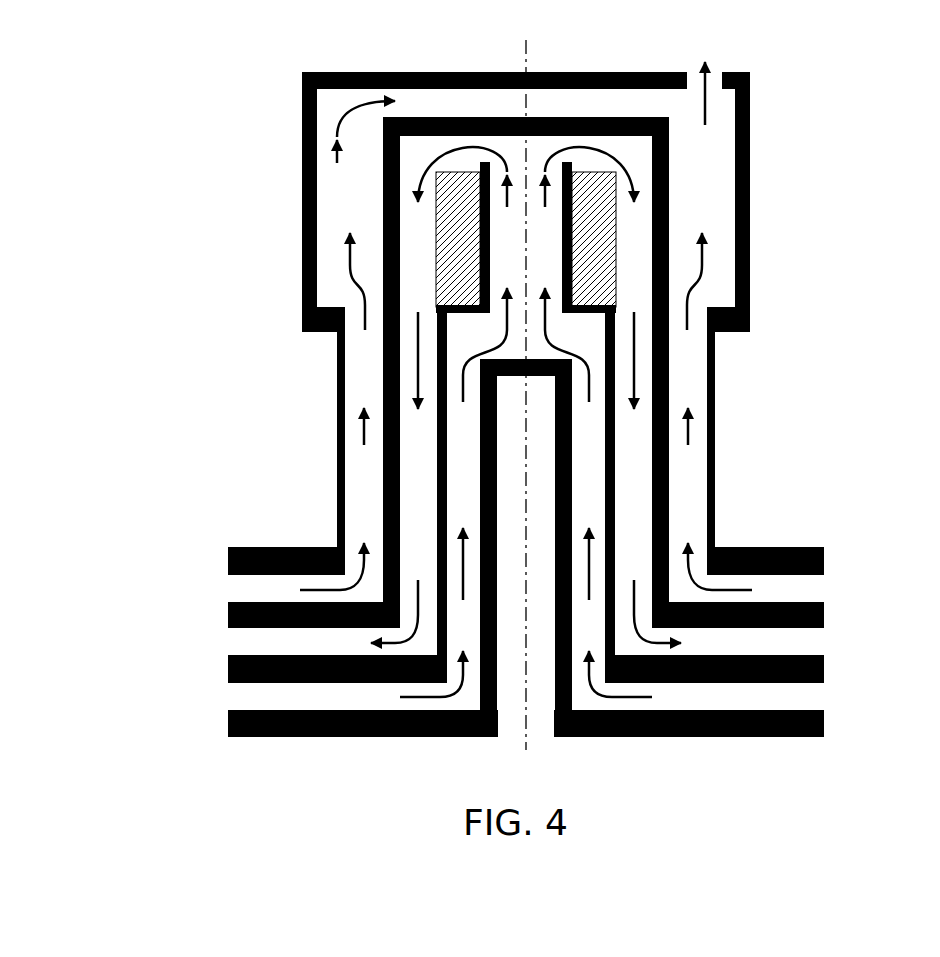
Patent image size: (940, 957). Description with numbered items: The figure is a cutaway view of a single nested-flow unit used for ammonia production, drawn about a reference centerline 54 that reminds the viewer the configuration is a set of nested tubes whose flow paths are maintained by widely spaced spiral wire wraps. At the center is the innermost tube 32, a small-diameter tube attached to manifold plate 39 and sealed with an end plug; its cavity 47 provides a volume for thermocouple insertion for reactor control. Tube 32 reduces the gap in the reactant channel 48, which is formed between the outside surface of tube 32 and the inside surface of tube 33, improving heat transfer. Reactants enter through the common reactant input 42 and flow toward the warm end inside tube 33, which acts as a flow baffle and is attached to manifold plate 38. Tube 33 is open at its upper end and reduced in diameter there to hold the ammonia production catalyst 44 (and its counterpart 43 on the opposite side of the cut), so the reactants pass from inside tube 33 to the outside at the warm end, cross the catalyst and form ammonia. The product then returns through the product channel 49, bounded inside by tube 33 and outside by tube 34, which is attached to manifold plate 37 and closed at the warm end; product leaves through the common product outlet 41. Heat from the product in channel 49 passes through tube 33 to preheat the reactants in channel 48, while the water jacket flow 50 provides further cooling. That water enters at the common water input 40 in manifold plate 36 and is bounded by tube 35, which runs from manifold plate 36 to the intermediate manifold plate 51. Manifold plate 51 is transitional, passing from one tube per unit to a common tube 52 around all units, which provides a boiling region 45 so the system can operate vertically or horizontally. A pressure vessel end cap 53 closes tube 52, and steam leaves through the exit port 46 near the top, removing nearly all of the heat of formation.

The innermost tube 32 is at (571, 425).
The tube 33 is at (618, 455).
The tube 34 is at (669, 485).
The tube 35 is at (716, 517).
The manifold plate 36 is at (228, 553).
The manifold plate 37 is at (228, 610).
The manifold plate 38 is at (228, 663).
The manifold plate 39 is at (228, 715).
The water input 40 is at (808, 588).
The product outlet 41 is at (808, 645).
The reactant input 42 is at (808, 698).
The left catalyst/heating element 43 is at (413, 236).
The ammonia production catalyst 44 is at (598, 244).
The boiling region 45 is at (702, 157).
The exit port 46 is at (724, 64).
The cavity 47 is at (538, 715).
The reactant channel 48 is at (463, 440).
The product channel 49 is at (420, 467).
The water jacket flow 50 is at (366, 496).
The intermediate manifold plate 51 is at (318, 335).
The common tube 52 is at (300, 260).
The pressure vessel end cap 53 is at (368, 68).
The reference centerline 54 is at (518, 42).